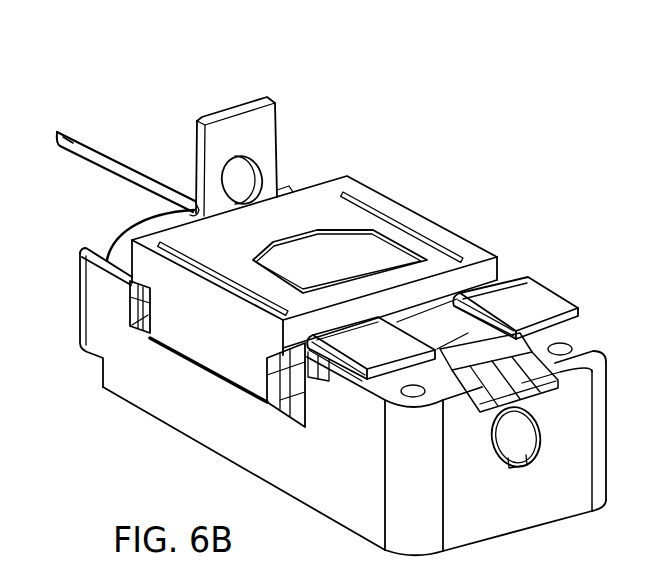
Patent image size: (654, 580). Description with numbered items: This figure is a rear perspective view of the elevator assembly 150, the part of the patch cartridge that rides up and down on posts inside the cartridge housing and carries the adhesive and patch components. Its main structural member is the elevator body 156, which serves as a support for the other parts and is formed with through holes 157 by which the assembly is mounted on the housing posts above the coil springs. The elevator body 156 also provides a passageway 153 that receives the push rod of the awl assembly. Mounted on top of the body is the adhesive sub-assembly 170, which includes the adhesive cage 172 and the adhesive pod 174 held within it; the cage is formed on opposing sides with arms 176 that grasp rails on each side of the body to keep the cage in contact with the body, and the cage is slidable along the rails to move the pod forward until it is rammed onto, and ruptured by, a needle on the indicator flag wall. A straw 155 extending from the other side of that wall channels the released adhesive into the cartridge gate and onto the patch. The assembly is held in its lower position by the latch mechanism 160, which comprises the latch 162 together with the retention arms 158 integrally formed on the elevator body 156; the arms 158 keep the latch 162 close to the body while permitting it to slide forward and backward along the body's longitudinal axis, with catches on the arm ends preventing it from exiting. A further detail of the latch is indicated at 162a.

The elevator assembly 150 is at (146, 116).
The passageway 153 is at (528, 453).
The straw 155 is at (58, 147).
The elevator body 156 is at (197, 409).
The through holes 157 is at (412, 396).
The retention arms 158 is at (403, 354).
The latch mechanism 160 is at (575, 289).
The latch 162 is at (459, 364).
The conductor fold 162a is at (327, 377).
The adhesive sub-assembly 170 is at (443, 204).
The adhesive cage 172 is at (224, 341).
The adhesive pod 174 is at (352, 271).
The arms 176 is at (285, 420).